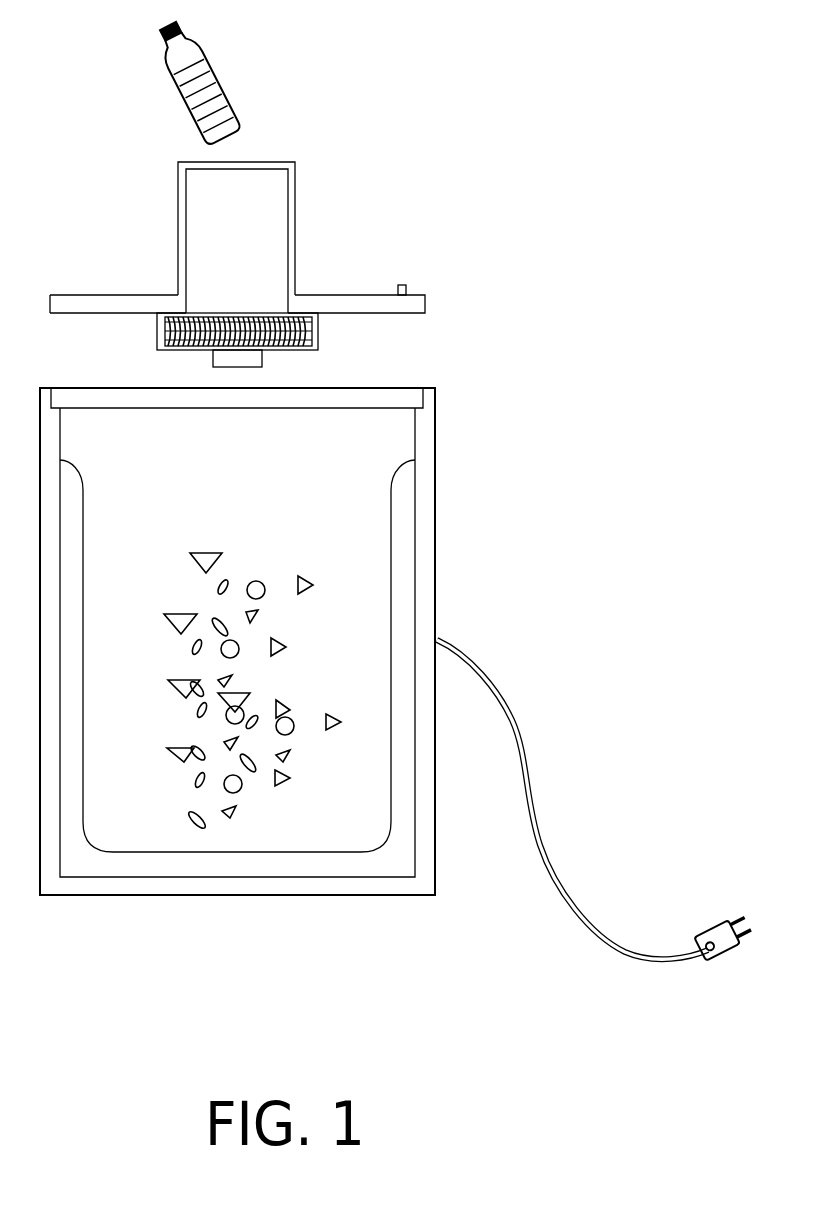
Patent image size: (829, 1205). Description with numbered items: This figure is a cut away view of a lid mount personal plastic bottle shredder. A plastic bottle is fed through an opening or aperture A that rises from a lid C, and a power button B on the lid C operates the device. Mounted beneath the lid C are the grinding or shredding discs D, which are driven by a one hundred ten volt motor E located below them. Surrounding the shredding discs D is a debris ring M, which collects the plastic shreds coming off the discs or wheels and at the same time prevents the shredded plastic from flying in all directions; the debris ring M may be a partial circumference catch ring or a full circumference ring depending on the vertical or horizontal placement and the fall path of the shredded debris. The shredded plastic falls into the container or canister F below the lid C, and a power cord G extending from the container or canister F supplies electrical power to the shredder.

The opening or aperture A is at (237, 172).
The power button B is at (404, 285).
The lid C is at (425, 310).
The grinding or shredding discs D is at (312, 330).
The 110 volt motor E is at (262, 358).
The container or canister F is at (436, 598).
The power cord G is at (562, 867).
The debris ring M is at (158, 330).